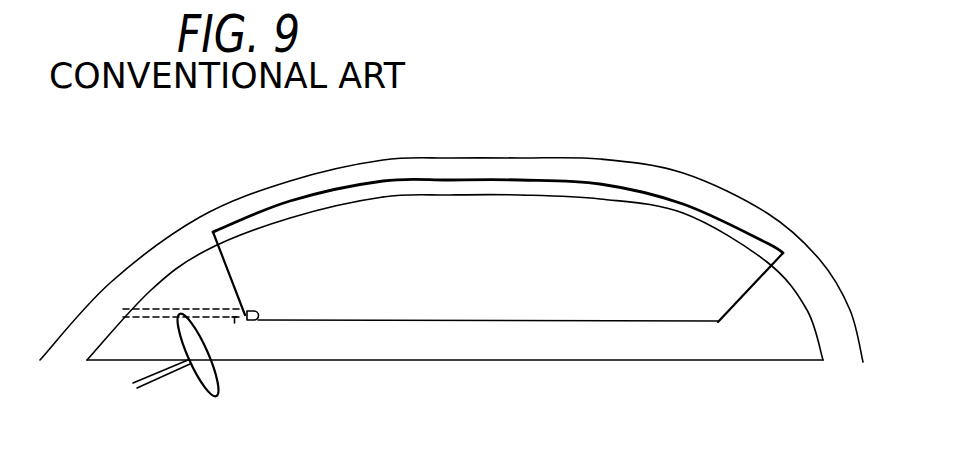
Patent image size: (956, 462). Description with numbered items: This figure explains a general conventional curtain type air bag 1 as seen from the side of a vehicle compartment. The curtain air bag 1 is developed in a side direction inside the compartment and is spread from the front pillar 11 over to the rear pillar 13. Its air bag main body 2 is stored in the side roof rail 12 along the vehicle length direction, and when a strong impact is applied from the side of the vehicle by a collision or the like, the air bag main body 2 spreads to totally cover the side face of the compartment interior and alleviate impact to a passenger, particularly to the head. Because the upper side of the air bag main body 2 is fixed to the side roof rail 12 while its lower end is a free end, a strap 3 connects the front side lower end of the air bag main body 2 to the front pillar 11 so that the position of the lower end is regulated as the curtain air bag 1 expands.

The curtain air bag 1 is at (564, 158).
The air bag main body 2 is at (475, 295).
The strap 3 is at (233, 318).
The front pillar 11 is at (153, 267).
The side roof rail 12 is at (463, 170).
The rear pillar 13 is at (820, 287).